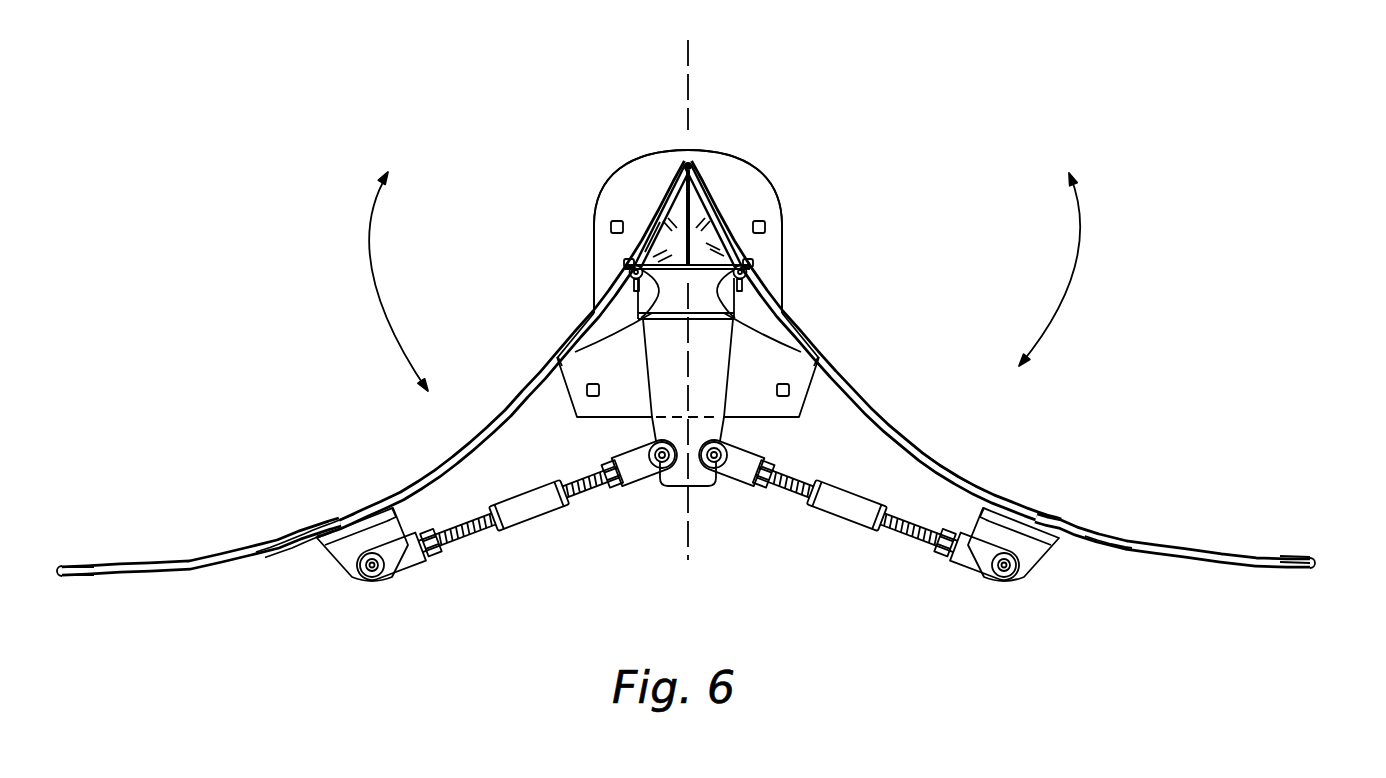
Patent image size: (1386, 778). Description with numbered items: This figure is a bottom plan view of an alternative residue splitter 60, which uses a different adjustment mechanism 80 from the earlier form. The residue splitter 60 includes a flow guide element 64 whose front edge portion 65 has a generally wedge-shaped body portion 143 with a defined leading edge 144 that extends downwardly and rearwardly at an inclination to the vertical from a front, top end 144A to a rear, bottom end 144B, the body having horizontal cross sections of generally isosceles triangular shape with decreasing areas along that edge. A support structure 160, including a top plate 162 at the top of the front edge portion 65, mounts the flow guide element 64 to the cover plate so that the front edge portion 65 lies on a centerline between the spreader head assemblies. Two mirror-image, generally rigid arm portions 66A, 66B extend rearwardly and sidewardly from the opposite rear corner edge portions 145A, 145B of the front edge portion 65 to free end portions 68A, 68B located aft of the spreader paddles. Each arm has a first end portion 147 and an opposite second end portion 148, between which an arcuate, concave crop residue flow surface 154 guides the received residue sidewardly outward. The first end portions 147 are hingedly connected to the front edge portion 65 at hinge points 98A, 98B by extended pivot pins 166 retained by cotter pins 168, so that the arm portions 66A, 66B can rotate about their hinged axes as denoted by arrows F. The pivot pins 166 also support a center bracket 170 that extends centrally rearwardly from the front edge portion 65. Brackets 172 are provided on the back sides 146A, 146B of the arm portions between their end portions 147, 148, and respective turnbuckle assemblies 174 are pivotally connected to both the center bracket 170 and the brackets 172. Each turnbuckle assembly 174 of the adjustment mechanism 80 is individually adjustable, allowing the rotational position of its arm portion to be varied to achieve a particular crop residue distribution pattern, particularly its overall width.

The residue splitter 60 is at (932, 90).
The flow guide element 64 is at (798, 200).
The front edge portion 65 is at (660, 210).
The arm portion 66A is at (884, 427).
The arm portion 66B is at (407, 484).
The free end portion 68A is at (1311, 560).
The free end portion 68B is at (62, 570).
The adjustment mechanism 80 is at (908, 556).
The hinge point 98A is at (739, 316).
The hinge point 98B is at (556, 352).
The wedge-shaped body portion 143 is at (672, 195).
The defined leading edge 144 is at (712, 212).
The front, top end 144A is at (697, 158).
The rear, bottom end 144B is at (650, 228).
The rear corner edge portion 145A is at (742, 290).
The rear corner edge portion 145B is at (638, 290).
The back side 146A is at (1112, 548).
The back side 146B is at (293, 546).
The first end portion 147 is at (590, 313).
The second end portion 148 is at (88, 577).
The crop residue flow surface 154 is at (290, 537).
The support structure 160 is at (664, 145).
The top plate 162 is at (731, 160).
The pivot pin 166 is at (629, 272).
The cotter pin 168 is at (628, 259).
The center bracket 170 is at (660, 434).
The bracket 172 is at (340, 570).
The turnbuckle assembly 174 is at (540, 524).
The arrows F is at (373, 248).